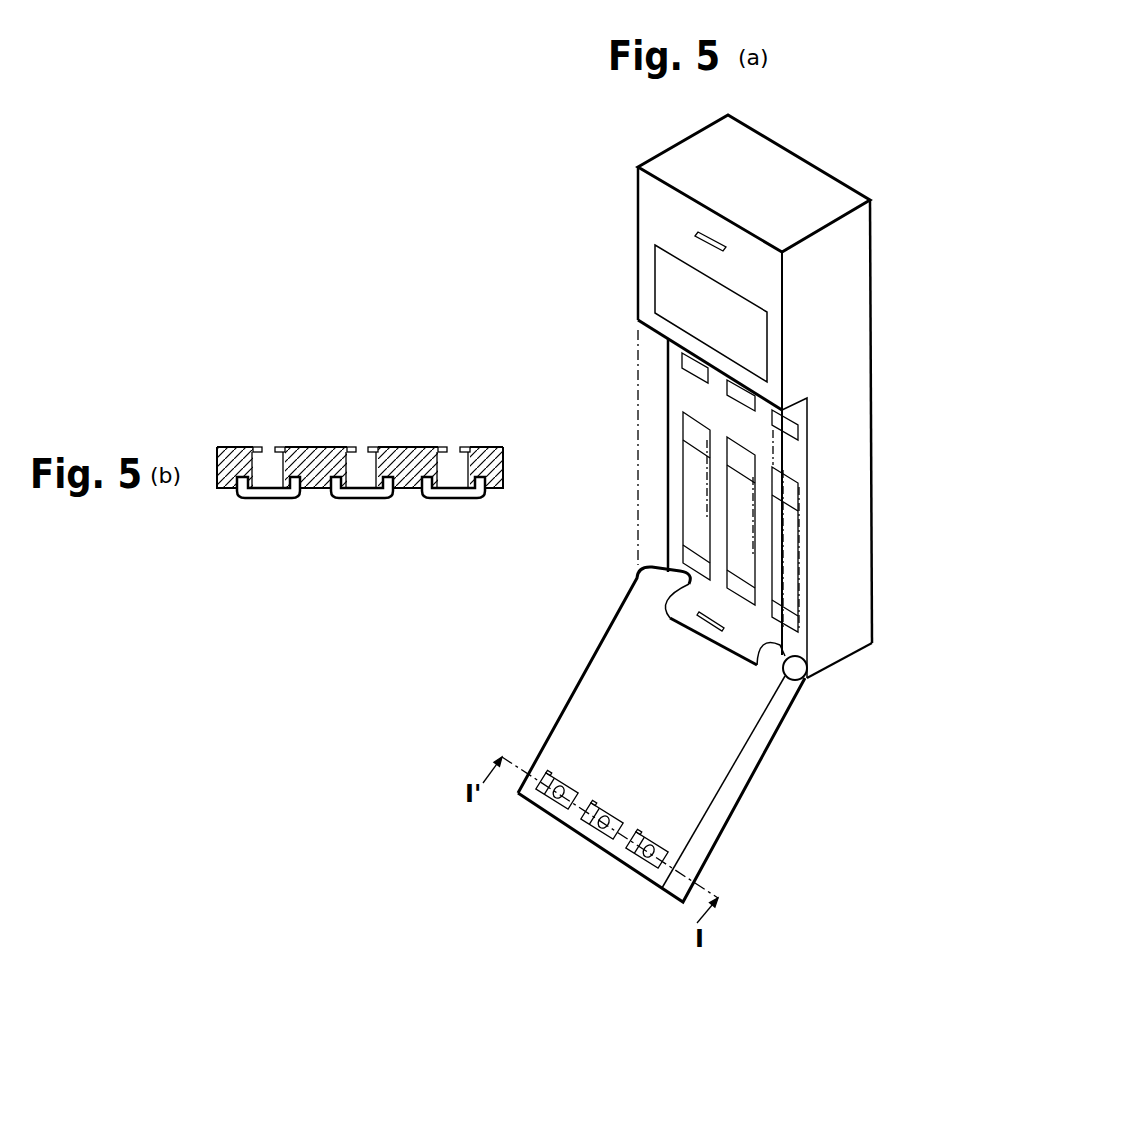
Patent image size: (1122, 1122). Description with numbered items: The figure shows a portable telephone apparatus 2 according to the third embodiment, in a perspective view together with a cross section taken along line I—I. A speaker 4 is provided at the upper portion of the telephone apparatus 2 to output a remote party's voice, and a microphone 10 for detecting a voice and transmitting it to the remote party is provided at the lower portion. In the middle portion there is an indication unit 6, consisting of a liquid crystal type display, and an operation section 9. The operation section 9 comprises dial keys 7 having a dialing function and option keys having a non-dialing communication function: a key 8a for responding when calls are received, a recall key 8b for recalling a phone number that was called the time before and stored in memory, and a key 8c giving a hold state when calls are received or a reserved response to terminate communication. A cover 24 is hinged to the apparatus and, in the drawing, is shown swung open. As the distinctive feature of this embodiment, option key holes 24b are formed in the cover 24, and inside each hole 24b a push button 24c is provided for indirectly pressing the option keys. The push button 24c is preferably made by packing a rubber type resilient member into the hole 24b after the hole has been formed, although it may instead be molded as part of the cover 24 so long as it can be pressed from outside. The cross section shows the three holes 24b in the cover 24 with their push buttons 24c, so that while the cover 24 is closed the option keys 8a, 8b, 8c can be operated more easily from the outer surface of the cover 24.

In FIG. 5A, the telephone apparatus 2 is at (770, 152).
In FIG. 5A, the speaker 4 is at (690, 238).
In FIG. 5A, the indication unit 6 is at (655, 290).
In FIG. 5A, the dial keys 7 is at (793, 494).
In FIG. 5A, the respond key 8a is at (682, 365).
In FIG. 5A, the recall key 8b is at (727, 395).
In FIG. 5A, the hold key 8c is at (798, 428).
In FIG. 5A, the operation section 9 is at (660, 470).
In FIG. 5A, the microphone 10 is at (678, 617).
In FIG. 5A, the cover 24 is at (646, 734).
In FIG. 5B, the cover 24 is at (360, 469).
In FIG. 5A, the option key hole 24b is at (547, 803).
In FIG. 5B, the option key hole 24b is at (265, 438).
In FIG. 5B, the push button 24c is at (273, 486).